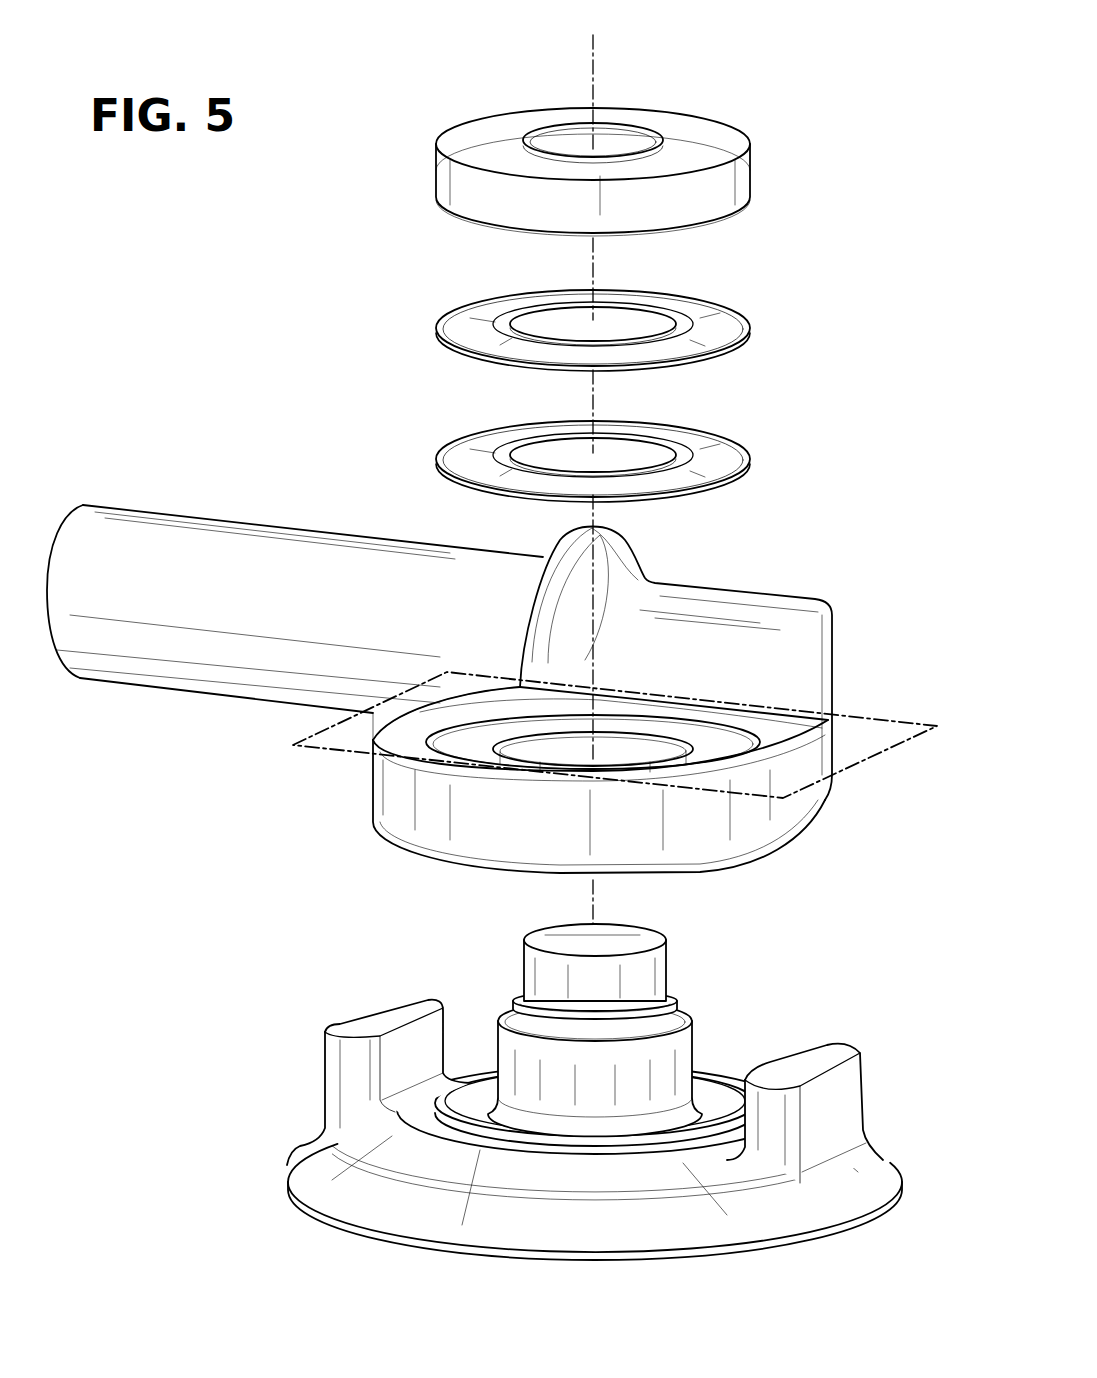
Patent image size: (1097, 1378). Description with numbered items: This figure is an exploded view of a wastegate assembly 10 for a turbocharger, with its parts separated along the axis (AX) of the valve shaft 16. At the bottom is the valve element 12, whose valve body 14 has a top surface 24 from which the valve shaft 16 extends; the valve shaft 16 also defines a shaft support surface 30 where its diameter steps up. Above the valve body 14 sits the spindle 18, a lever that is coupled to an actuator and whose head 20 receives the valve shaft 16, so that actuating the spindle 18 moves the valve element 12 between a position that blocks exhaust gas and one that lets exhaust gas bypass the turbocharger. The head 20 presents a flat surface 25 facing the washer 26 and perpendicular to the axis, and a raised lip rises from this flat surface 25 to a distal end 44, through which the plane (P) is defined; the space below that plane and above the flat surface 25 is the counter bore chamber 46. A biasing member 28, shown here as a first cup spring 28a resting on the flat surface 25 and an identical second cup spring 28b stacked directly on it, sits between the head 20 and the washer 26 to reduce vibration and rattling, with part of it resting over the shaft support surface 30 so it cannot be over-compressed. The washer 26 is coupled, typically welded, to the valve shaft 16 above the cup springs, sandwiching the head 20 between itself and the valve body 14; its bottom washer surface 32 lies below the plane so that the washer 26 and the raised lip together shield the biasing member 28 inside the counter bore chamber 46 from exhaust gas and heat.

The wastegate assembly 10 is at (881, 84).
The valve element 12 is at (572, 1108).
The valve body 14 is at (495, 1245).
The valve shaft 16 is at (656, 975).
The spindle 18 is at (195, 540).
The head 20 is at (612, 712).
The top surface 24 is at (703, 1078).
The flat surface 25 is at (703, 733).
The washer 26 is at (740, 183).
The biasing member 28 is at (531, 396).
The first cup spring 28a is at (463, 460).
The second cup spring 28b is at (463, 328).
The shaft support surface 30 is at (675, 1003).
The bottom washer surface 32 is at (464, 219).
The distal end 44 is at (392, 742).
The counter bore chamber 46 is at (470, 748).